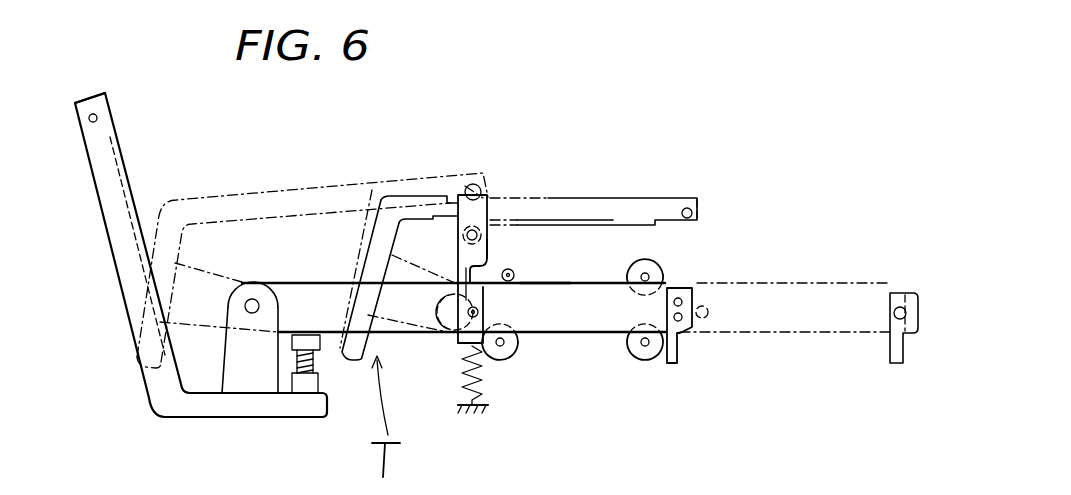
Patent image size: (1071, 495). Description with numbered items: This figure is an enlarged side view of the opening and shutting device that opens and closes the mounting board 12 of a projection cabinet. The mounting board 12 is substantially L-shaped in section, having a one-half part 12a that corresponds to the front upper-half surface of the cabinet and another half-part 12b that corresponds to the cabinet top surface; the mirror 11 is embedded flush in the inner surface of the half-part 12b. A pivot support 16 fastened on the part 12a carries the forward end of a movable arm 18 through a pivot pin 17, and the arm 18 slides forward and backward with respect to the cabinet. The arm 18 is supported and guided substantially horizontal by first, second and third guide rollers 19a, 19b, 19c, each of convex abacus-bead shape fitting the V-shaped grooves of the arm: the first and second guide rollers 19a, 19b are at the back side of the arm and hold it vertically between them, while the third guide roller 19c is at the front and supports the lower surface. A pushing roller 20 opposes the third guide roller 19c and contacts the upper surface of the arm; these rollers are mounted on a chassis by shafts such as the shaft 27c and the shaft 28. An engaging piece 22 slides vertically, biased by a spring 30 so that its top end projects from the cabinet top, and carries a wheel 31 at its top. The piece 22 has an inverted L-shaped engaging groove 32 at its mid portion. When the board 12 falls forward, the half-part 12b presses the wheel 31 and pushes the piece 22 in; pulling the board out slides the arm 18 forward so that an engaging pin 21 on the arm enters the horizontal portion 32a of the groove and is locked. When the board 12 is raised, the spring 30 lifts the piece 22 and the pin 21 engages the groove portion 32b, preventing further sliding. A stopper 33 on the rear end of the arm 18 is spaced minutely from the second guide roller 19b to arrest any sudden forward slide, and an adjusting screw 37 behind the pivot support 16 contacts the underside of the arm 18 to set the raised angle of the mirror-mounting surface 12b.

The mirror 11 is at (128, 177).
The mounting board 12 is at (98, 193).
The one-half part of the mounting board 12a is at (183, 410).
The other half-part of the mounting board 12b is at (112, 110).
The pivot support 16 is at (230, 362).
The pivot pin 17 is at (251, 298).
The movable arm 18 is at (607, 334).
The first guide roller 19a is at (663, 267).
The second guide roller 19b is at (652, 360).
The third guide roller 19c is at (517, 352).
The pushing roller 20 is at (535, 278).
The engaging pin 21 is at (456, 346).
The engaging piece 22 is at (497, 197).
The shaft 27c is at (506, 360).
The shaft 28 is at (512, 271).
The spring 30 is at (468, 406).
The wheel 31 is at (473, 185).
The engaging groove 32 is at (462, 275).
The horizontal portion of the engaging groove 32a is at (488, 240).
The engaging groove portion 32b is at (455, 340).
The stopper 33 is at (680, 350).
The adjusting screw 37 is at (317, 350).